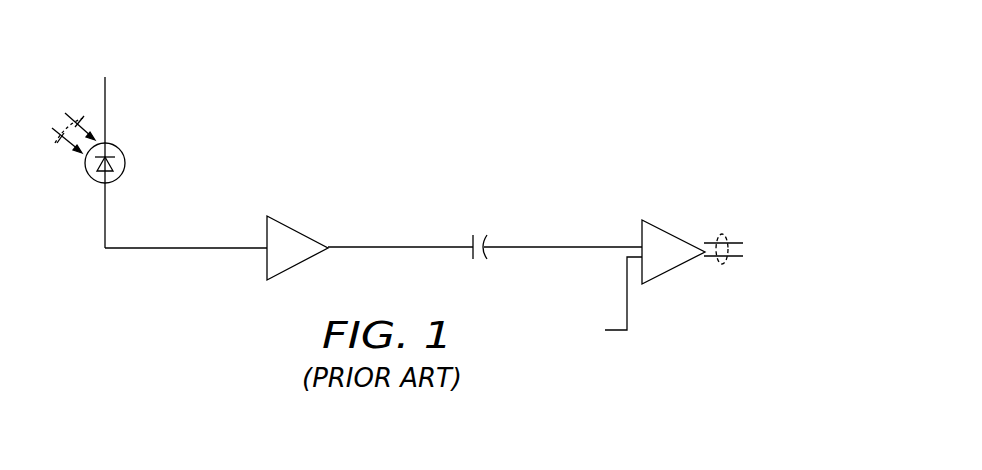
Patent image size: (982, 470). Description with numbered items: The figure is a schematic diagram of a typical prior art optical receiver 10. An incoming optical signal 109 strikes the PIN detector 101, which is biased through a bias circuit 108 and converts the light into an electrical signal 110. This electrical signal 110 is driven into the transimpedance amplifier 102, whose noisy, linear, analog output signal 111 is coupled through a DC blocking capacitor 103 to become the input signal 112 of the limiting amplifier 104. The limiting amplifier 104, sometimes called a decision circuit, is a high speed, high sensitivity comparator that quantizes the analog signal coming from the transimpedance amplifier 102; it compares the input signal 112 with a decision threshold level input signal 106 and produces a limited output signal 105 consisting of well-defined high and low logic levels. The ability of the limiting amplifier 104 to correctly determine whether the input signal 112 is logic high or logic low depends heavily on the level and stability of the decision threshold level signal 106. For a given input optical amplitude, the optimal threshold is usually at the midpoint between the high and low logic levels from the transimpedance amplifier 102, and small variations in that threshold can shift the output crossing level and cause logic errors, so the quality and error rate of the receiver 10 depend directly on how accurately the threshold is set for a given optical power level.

The optical receiver 10 is at (618, 120).
The PIN detector 101 is at (98, 183).
The transimpedance amplifier 102 is at (292, 228).
The DC blocking capacitor 103 is at (478, 233).
The limiting amplifier 104 is at (675, 230).
The limited output signal 105 is at (720, 265).
The decision threshold level input signal 106 is at (627, 298).
The bias circuit 108 is at (105, 88).
The optical signal 109 is at (58, 145).
The electrical signal 110 is at (147, 250).
The output signal 111 is at (413, 245).
The input signal 112 is at (552, 243).